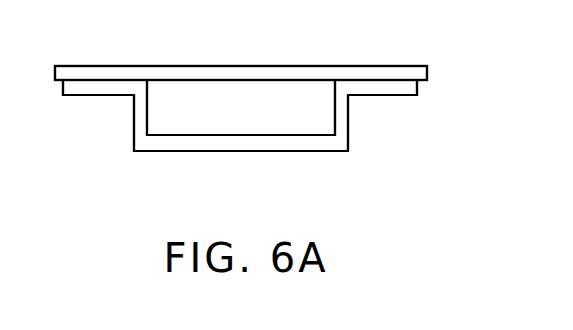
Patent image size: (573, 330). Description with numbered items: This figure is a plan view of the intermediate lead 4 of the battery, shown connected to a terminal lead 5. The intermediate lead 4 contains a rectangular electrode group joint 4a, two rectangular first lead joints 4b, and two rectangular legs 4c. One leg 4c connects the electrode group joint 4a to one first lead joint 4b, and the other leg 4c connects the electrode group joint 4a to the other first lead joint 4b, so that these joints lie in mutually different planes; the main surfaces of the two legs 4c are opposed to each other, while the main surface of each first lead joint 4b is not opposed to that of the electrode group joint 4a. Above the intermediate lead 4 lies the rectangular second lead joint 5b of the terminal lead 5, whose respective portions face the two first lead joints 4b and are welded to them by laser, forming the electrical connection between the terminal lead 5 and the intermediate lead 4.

The intermediate lead 4 is at (297, 162).
The electrode group joint 4a is at (236, 153).
The first lead joint 4b is at (95, 87).
The leg 4c is at (139, 126).
The terminal lead 5 is at (337, 62).
The second lead joint 5b is at (413, 72).